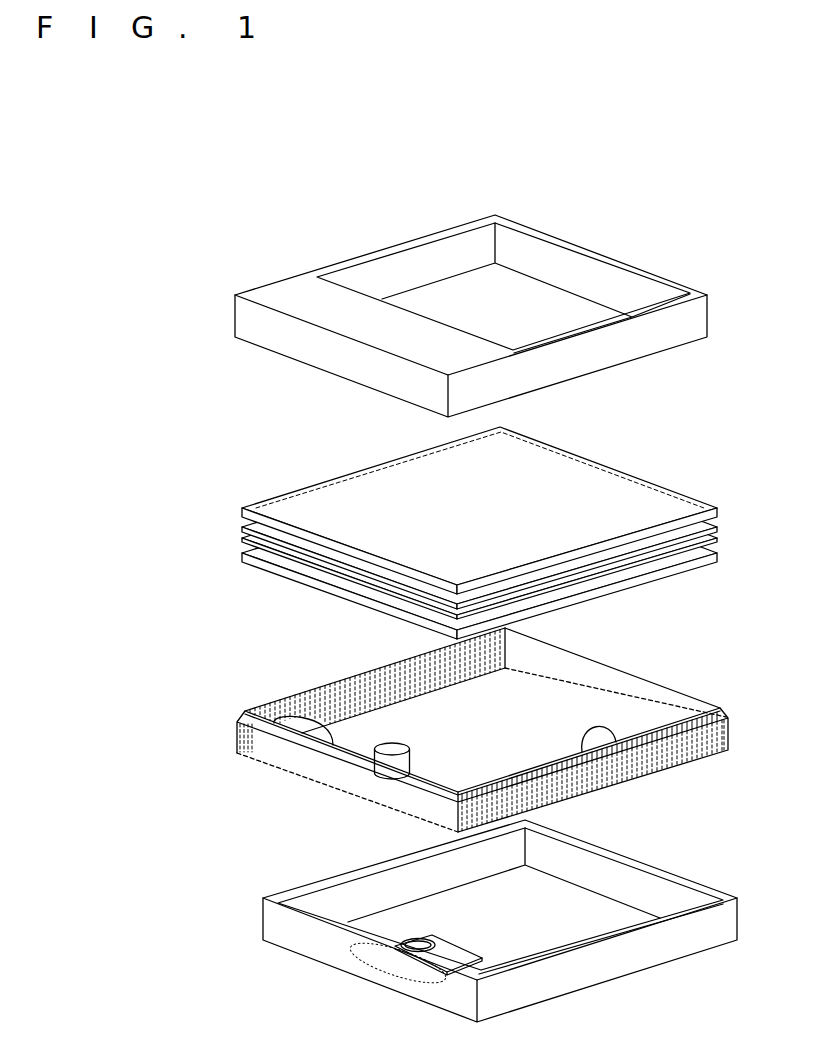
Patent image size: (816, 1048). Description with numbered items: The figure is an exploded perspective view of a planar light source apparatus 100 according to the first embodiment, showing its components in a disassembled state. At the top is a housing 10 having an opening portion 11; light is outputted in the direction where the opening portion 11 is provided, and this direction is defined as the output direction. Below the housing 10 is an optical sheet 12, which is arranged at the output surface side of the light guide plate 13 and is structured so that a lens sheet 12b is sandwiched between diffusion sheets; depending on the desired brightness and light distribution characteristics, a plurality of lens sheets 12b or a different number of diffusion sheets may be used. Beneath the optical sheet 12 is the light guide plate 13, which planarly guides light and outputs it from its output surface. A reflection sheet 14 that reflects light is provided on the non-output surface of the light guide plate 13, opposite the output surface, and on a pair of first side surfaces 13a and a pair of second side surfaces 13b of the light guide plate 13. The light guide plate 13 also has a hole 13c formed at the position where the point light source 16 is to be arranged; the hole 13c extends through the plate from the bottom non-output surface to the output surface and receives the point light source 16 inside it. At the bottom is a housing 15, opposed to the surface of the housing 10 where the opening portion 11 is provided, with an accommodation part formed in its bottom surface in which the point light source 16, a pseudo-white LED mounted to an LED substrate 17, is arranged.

The planar light source apparatus 100 is at (607, 204).
The housing 10 is at (471, 307).
The opening portion 11 is at (423, 252).
The optical sheet 12 is at (469, 533).
The lens sheet 12b is at (250, 539).
The light guide plate 13 is at (464, 729).
The first side surface 13a is at (275, 728).
The second side surface 13b is at (387, 667).
The hole 13c is at (400, 743).
The reflection sheet 14 is at (372, 800).
The housing 15 is at (610, 982).
The point light source 16 is at (425, 938).
The LED substrate 17 is at (463, 957).